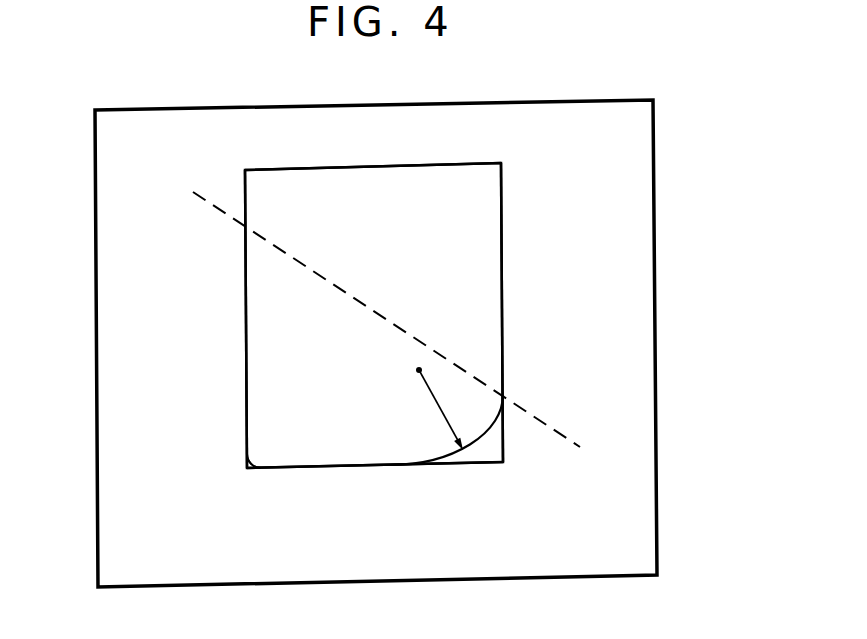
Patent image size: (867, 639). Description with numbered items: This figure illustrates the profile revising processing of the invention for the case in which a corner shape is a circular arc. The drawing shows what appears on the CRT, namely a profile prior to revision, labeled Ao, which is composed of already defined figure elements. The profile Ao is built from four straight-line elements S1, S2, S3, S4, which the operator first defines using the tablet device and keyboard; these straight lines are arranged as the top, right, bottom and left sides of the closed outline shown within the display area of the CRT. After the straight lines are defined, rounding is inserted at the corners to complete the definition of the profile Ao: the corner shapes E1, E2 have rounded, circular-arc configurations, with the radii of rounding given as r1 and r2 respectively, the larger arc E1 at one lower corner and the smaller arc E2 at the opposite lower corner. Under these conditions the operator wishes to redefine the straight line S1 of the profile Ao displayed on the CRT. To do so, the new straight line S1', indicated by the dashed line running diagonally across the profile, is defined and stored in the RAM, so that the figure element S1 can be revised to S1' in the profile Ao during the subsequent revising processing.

The element CRT is at (656, 329).
The profile prior to revision Ao is at (459, 160).
The straight-line element S1 is at (373, 122).
The redefined straight line S1' is at (386, 261).
The straight-line element S2 is at (501, 207).
The straight-line element S3 is at (372, 466).
The straight-line element S4 is at (246, 333).
The corner shape E1 is at (487, 428).
The corner shape E2 is at (247, 470).
The rounding radius r1 is at (435, 408).
The rounding radius r2 is at (283, 430).